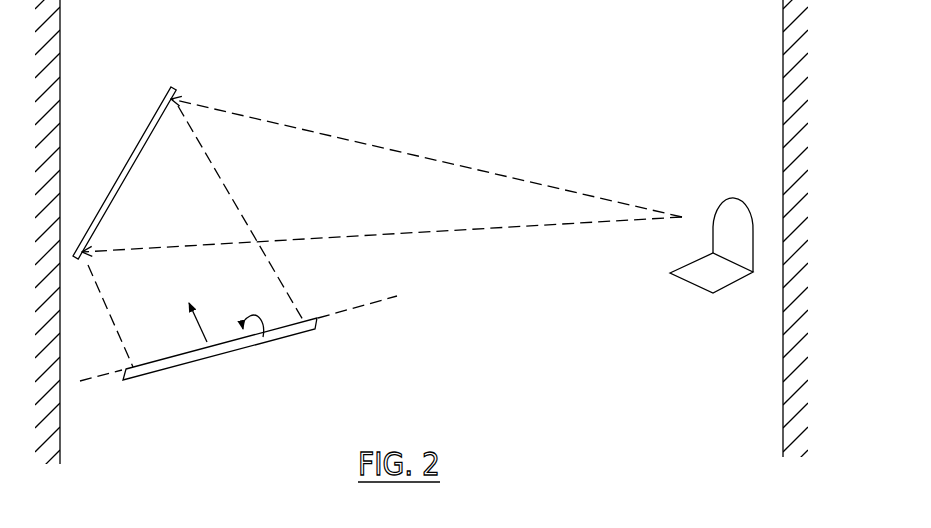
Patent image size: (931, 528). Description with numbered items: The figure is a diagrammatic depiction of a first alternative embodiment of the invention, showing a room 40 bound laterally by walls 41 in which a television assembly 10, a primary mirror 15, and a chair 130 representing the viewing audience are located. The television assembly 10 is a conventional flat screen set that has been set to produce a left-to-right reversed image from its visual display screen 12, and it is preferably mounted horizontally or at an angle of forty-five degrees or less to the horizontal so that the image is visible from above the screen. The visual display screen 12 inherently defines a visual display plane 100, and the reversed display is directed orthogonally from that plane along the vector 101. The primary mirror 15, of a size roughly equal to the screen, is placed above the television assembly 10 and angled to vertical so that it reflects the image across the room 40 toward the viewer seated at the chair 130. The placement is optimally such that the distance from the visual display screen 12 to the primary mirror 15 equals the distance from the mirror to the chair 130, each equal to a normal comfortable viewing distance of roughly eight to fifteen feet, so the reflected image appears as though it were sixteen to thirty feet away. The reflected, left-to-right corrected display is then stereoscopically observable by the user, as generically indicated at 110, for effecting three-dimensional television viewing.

The television assembly 10 is at (153, 386).
The visual display screen 12 is at (263, 338).
The primary mirror 15 is at (172, 87).
The room 40 is at (518, 56).
The walls 41 is at (61, 27).
The visual display plane 100 is at (406, 292).
The vector 101 is at (196, 333).
The stereoscopic observation 110 is at (690, 215).
The chair 130 is at (733, 196).